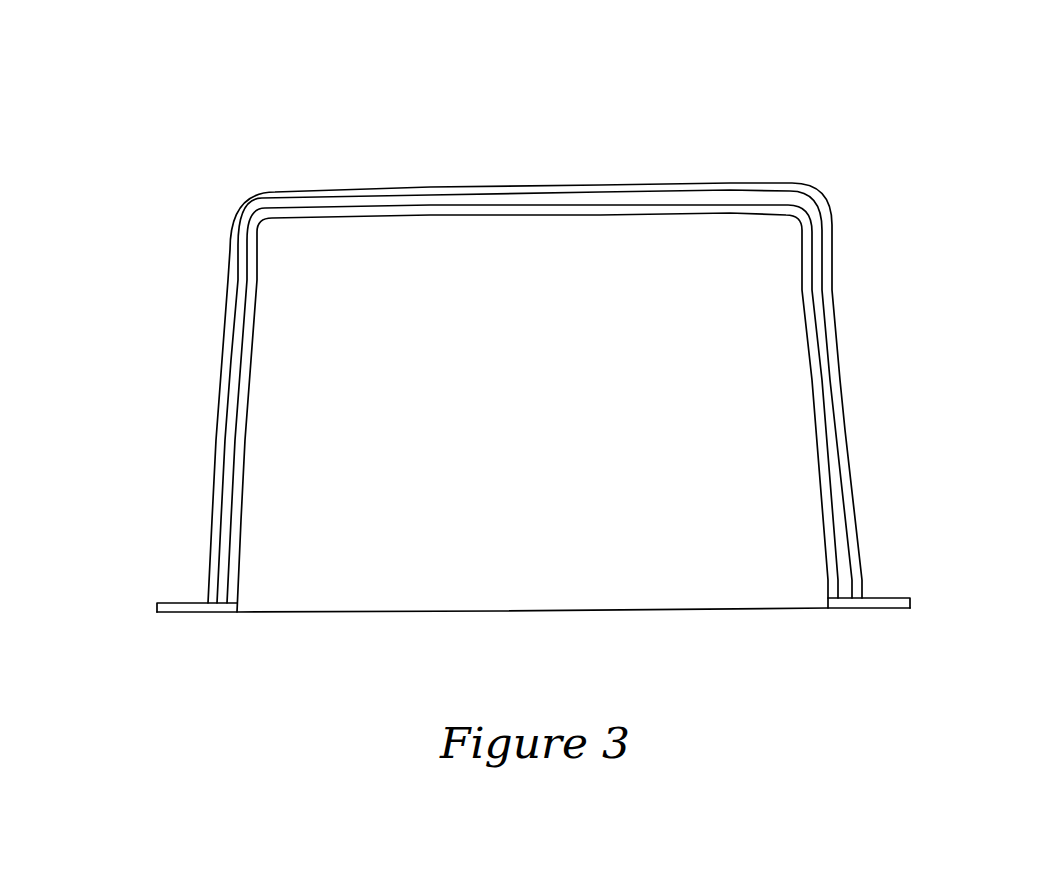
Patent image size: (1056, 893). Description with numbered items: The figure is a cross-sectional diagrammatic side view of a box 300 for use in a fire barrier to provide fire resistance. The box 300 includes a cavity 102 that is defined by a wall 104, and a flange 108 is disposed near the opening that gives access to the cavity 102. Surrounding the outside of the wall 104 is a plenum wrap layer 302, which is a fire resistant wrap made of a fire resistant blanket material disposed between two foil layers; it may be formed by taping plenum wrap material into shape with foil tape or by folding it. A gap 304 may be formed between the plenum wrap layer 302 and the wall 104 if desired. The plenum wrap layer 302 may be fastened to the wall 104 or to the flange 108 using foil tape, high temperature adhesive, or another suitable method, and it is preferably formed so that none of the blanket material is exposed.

The box 300 is at (770, 108).
The plenum wrap layer 302 is at (225, 338).
The gap 304 is at (307, 203).
The wall 104 is at (803, 278).
The cavity 102 is at (527, 242).
The flange 108 is at (183, 607).